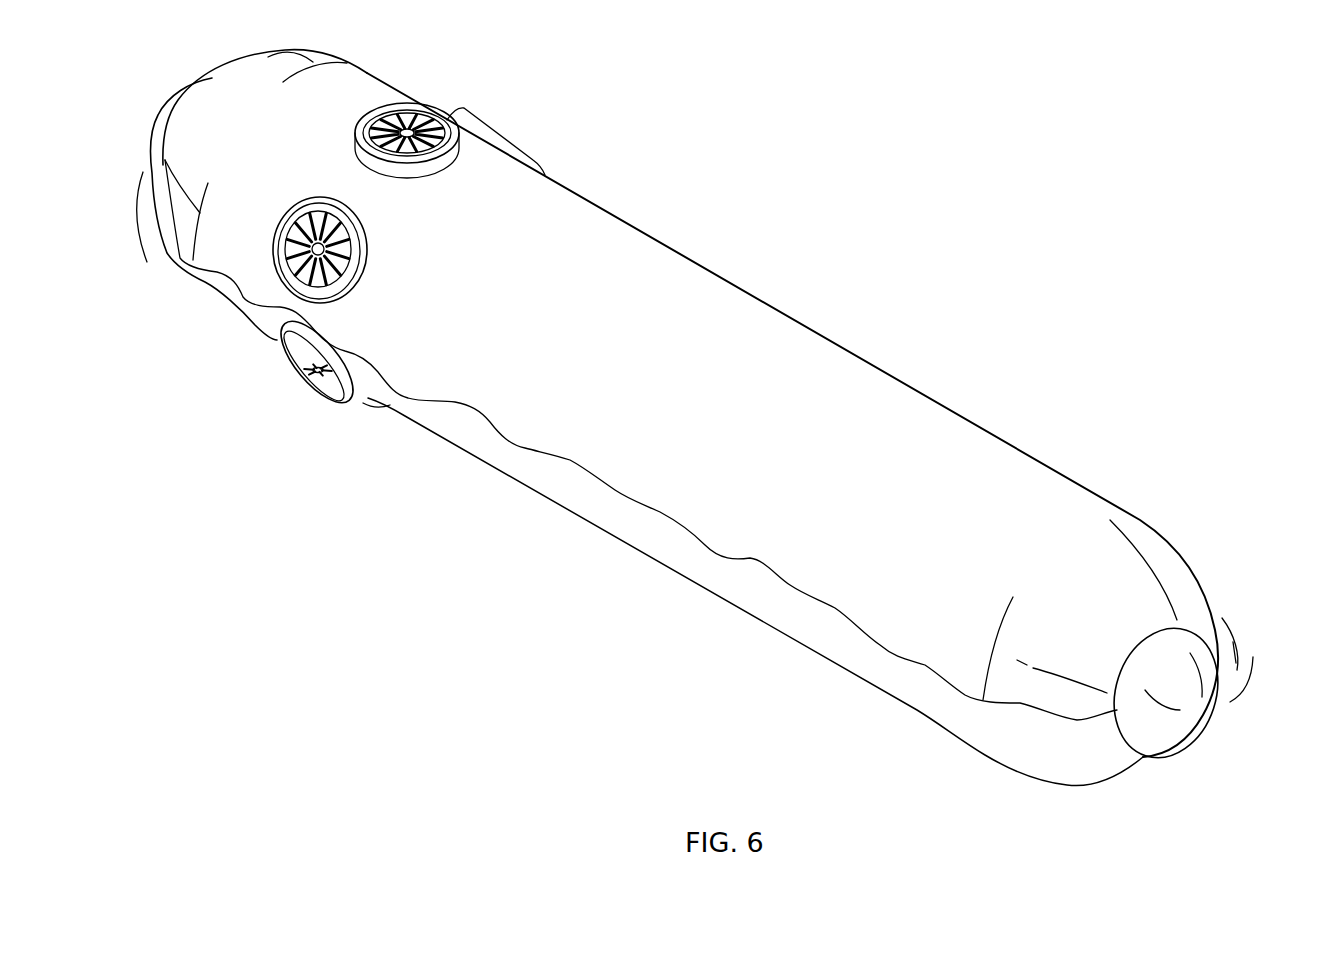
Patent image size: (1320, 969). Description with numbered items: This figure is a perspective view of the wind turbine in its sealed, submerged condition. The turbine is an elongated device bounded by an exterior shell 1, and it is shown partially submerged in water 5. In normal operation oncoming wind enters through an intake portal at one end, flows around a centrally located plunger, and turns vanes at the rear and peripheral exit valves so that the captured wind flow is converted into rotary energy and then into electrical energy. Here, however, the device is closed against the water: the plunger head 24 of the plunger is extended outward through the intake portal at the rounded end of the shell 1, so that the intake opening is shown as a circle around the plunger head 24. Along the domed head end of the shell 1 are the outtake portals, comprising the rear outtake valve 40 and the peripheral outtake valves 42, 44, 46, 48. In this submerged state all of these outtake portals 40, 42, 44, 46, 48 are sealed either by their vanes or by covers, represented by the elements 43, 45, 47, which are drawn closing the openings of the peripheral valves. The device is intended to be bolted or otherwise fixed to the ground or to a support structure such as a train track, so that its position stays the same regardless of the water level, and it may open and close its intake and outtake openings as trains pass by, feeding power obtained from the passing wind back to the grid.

The exterior shell 1 is at (713, 292).
The water 5 is at (333, 543).
The plunger head 24 is at (1197, 667).
The rear outtake valve 40 is at (163, 123).
The peripheral outtake valve 42 is at (302, 338).
The cover 43 is at (330, 375).
The peripheral outtake valve 44 is at (287, 213).
The cover 45 is at (300, 245).
The peripheral outtake valve 46 is at (385, 103).
The cover 47 is at (413, 127).
The peripheral outtake valve 48 is at (497, 133).